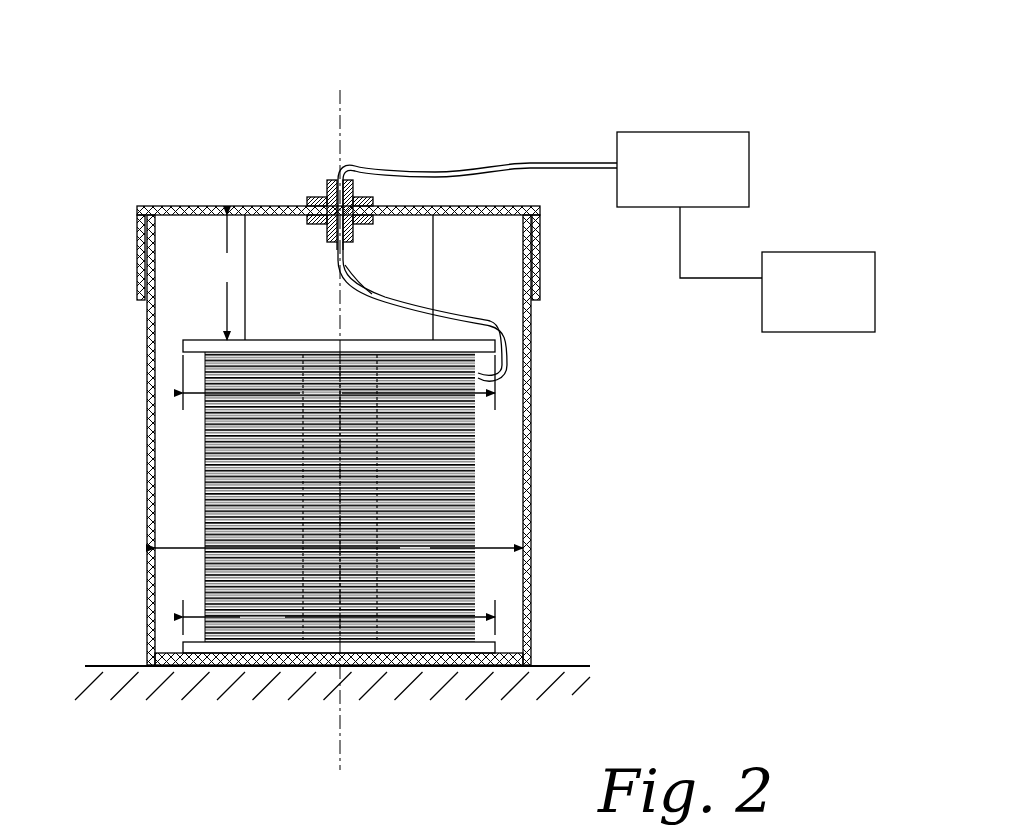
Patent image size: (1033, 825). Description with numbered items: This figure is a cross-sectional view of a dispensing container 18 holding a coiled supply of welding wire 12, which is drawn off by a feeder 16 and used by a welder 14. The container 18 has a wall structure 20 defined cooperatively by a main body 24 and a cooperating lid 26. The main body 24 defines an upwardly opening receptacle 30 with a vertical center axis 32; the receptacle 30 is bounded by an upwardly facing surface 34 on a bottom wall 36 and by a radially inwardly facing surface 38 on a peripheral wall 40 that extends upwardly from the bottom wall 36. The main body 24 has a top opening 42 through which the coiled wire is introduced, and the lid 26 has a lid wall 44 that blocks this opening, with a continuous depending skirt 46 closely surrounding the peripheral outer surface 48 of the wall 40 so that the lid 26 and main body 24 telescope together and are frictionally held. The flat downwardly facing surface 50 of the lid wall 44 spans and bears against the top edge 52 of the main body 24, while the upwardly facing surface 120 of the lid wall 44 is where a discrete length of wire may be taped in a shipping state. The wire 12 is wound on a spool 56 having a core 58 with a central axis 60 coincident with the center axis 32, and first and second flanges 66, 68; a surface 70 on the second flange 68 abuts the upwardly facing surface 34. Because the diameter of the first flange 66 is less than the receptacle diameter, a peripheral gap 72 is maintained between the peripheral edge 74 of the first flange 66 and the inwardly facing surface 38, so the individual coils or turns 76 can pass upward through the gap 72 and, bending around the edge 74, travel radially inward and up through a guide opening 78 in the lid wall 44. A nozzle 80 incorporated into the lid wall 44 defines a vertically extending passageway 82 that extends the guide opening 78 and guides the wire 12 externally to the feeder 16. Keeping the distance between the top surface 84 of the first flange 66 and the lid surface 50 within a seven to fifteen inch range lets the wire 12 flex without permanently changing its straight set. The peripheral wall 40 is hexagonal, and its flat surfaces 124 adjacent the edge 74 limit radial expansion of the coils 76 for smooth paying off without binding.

The welding wire 12 is at (432, 168).
The welder 14 is at (818, 292).
The feeder 16 is at (689, 205).
The dispensing container 18 is at (105, 197).
The wall structure 20 is at (143, 305).
The main body 24 is at (533, 597).
The lid 26 is at (207, 212).
The receptacle 30 is at (160, 578).
The vertical center axis 32 is at (337, 100).
The upwardly facing surface 34 is at (272, 652).
The bottom wall 36 is at (383, 665).
The radially inwardly facing surface 38 is at (480, 285).
The peripheral wall 40 is at (533, 470).
The top opening 42 is at (153, 230).
The lid wall 44 is at (243, 245).
The depending skirt 46 is at (542, 268).
The peripheral outer surface 48 is at (533, 492).
The downwardly facing surface 50 is at (483, 226).
The top edge 52 is at (152, 213).
The spool 56 is at (205, 340).
The core 58 is at (200, 527).
The central axis 60 is at (335, 625).
The first flange 66 is at (270, 340).
The second flange 68 is at (208, 665).
The surface 70 is at (450, 665).
The peripheral gap 72 is at (163, 333).
The peripheral edge 74 is at (183, 353).
The coils/turns 76 is at (267, 463).
The guide opening 78 is at (307, 205).
The nozzle 80 is at (357, 240).
The passageway 82 is at (338, 243).
The top surface 84 is at (368, 336).
The upwardly facing surface 120 is at (222, 215).
The flat surfaces 124 is at (183, 250).